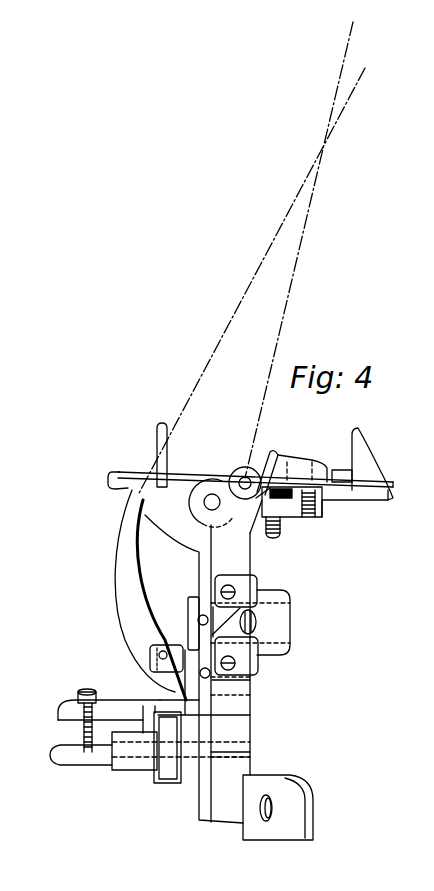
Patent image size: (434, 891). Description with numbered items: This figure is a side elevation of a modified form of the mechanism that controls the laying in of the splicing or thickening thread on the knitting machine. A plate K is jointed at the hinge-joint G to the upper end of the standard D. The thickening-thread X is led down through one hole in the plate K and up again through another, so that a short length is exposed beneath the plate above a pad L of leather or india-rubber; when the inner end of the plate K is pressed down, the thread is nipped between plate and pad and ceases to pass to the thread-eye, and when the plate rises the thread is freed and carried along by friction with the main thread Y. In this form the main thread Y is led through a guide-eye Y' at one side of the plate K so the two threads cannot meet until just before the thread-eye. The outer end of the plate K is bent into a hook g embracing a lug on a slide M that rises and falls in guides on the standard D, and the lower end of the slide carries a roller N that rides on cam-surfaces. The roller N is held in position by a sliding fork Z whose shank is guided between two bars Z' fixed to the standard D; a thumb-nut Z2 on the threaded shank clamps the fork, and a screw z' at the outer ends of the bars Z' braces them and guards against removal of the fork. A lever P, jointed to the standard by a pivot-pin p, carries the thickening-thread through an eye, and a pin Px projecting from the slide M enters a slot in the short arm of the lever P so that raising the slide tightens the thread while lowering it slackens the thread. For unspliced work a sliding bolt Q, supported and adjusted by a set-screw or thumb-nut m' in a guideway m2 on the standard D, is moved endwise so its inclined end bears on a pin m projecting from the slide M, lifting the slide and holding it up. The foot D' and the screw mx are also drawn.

The thickening-thread X is at (251, 281).
The main thread Y is at (296, 250).
The guide-eye Y' is at (278, 463).
The plate K is at (255, 469).
The hook or socket g is at (136, 467).
The hinge-joint G is at (205, 502).
The pad L is at (279, 515).
The standard D is at (302, 625).
The foot D' is at (278, 807).
The slide M is at (198, 558).
The pin m is at (187, 637).
The guideway m2 is at (236, 591).
The set-screw or thumb-nut m' is at (273, 611).
The screw mx is at (236, 656).
The sliding bolt Q is at (251, 622).
The pivot-pin p is at (160, 652).
The lever P is at (149, 595).
The pin Px is at (245, 677).
The sliding fork Z is at (179, 723).
The bars Z' is at (102, 730).
The screw z' is at (87, 712).
The thumb-nut Z2 is at (193, 682).
The roller N is at (167, 747).